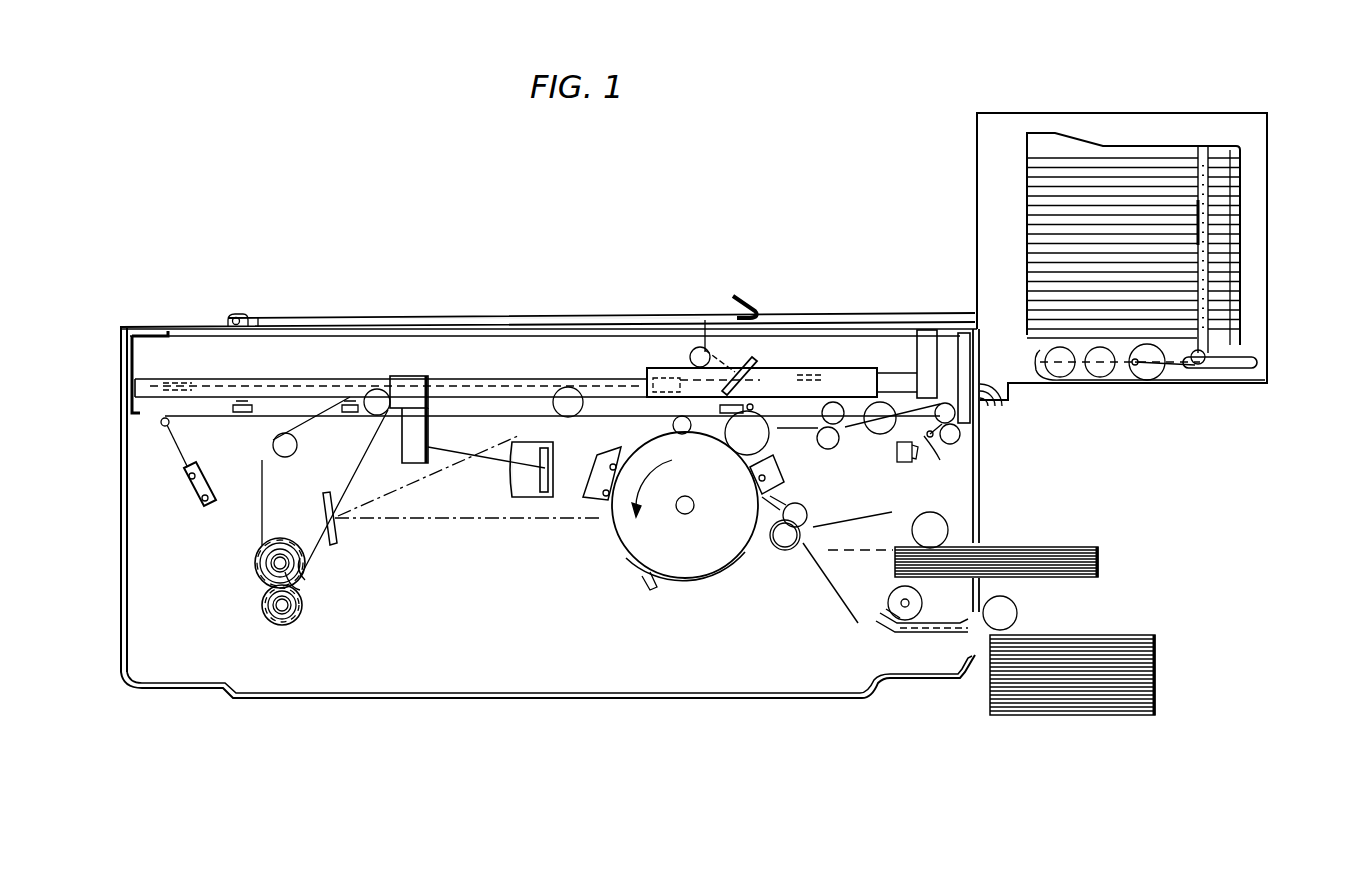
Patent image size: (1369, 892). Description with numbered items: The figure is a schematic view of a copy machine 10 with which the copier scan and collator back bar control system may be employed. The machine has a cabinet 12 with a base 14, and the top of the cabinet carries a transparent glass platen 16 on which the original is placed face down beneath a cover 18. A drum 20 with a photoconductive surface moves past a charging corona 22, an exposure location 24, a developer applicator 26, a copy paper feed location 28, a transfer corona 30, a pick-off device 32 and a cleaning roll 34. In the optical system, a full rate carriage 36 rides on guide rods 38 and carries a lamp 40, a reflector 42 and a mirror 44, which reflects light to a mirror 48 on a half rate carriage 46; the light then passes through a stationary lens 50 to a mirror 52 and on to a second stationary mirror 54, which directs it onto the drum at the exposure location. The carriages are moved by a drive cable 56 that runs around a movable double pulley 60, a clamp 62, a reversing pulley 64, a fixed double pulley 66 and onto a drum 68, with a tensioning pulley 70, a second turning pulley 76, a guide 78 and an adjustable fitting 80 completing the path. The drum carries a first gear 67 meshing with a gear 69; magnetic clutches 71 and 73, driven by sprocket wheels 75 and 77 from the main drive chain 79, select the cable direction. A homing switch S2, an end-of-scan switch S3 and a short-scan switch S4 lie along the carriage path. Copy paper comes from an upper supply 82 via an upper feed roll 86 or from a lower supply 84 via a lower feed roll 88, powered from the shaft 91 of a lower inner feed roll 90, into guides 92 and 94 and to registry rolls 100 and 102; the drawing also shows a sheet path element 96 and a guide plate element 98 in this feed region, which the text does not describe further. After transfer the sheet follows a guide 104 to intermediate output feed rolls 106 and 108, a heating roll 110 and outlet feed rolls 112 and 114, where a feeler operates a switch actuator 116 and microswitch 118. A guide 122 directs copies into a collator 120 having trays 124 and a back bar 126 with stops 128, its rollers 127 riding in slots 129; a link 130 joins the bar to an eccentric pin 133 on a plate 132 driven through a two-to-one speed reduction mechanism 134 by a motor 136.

The copy machine 10 is at (781, 291).
The cabinet 12 is at (121, 466).
The base 14 is at (784, 695).
The platen 16 is at (268, 327).
The cover 18 is at (402, 322).
The drum 20 is at (742, 555).
The charging corona 22 is at (616, 456).
The exposure location 24 is at (606, 522).
The developer applicator 26 is at (690, 582).
The copy paper feed location 28 is at (786, 492).
The transfer corona 30 is at (776, 462).
The pick-off device 32 is at (742, 452).
The cleaning roll 34 is at (680, 434).
The full rate carriage 36 is at (856, 375).
The guide rods 38 is at (605, 380).
The lamp 40 is at (706, 330).
The reflector 42 is at (698, 345).
The mirror 44 is at (752, 368).
The half rate carriage 46 is at (452, 398).
The mirror 48 is at (428, 372).
The lens 50 is at (512, 490).
The mirror 52 is at (553, 460).
The second stationary mirror 54 is at (340, 545).
The drive cable 56 is at (203, 422).
The movable double pulley 60 is at (570, 416).
The clamp 62 is at (666, 398).
The reversing pulley 64 is at (812, 376).
The fixed double pulley 66 is at (378, 414).
The first gear 67 is at (281, 540).
The drum 68 is at (258, 578).
The gear 69 is at (292, 622).
The tensioning pulley 70 is at (288, 452).
The magnetic clutch 71 is at (335, 558).
The magnetic clutch 73 is at (282, 615).
The sprocket wheel 75 is at (305, 578).
The second turning pulley 76 is at (170, 388).
The sprocket wheel 77 is at (305, 588).
The guide 78 is at (160, 422).
The main drive chain 79 is at (300, 608).
The adjustable fitting 80 is at (200, 506).
The upper or auxiliary supply 82 is at (1085, 547).
The lower or main supply 84 is at (1098, 642).
The upper feed roll 86 is at (930, 512).
The lower feed roll 88 is at (1012, 610).
The lower inner feed roll 90 is at (915, 604).
The shaft 91 is at (901, 602).
The guide 92 is at (912, 634).
The guide 94 is at (942, 637).
The paper path 96 is at (870, 517).
The guide plate 98 is at (830, 585).
The registry roll 100 is at (800, 503).
The registry roll 102 is at (788, 550).
The guide 104 is at (808, 436).
The intermediate output feed roll 106 is at (822, 413).
The intermediate output feed roll 108 is at (892, 432).
The heating roll 110 is at (898, 416).
The outlet feed roll 112 is at (947, 403).
The outlet feed roll 114 is at (956, 442).
The switch actuator 116 is at (940, 460).
The microswitch 118 is at (902, 463).
The collator 120 is at (934, 230).
The guide 122 is at (1000, 420).
The shelves or trays 124 is at (1147, 158).
The back bar 126 is at (1205, 150).
The rollers 127 is at (1195, 352).
The stops 128 is at (1205, 245).
The slots 129 is at (1257, 362).
The link 130 is at (1195, 385).
The plate 132 is at (1155, 375).
The eccentric pin 133 is at (1150, 378).
The two-to-one speed reduction mechanism 134 is at (1103, 378).
The motor 136 is at (1055, 378).
The homing switch S2 is at (720, 409).
The switch S3 is at (258, 407).
The switch S4 is at (358, 398).